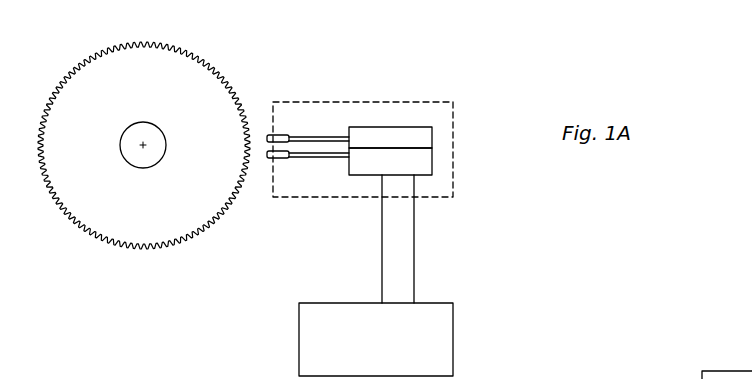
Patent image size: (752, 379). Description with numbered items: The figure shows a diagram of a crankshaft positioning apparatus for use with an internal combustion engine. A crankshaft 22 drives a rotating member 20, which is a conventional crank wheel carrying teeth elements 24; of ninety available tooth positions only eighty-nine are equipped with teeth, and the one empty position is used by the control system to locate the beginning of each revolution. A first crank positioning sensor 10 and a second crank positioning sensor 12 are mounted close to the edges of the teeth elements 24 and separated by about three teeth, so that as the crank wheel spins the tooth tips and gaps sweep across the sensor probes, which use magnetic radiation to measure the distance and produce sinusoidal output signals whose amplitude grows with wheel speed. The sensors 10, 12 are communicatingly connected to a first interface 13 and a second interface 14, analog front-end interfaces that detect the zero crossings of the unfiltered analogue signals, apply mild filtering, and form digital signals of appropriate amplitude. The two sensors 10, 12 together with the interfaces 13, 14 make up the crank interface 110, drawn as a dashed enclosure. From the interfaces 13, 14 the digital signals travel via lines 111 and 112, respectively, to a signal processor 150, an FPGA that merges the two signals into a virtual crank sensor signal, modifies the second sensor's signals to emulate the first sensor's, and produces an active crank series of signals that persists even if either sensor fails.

The first crank positioning sensor 10 is at (285, 135).
The second crank positioning sensor 12 is at (288, 159).
The first interface 13 is at (372, 140).
The second interface 14 is at (392, 168).
The rotating member 20 is at (144, 157).
The crankshaft 22 is at (135, 168).
The teeth elements 24 is at (225, 82).
The crank interface 110 is at (360, 138).
The line 111 is at (382, 233).
The line 112 is at (414, 250).
The signal processor 150 is at (299, 340).